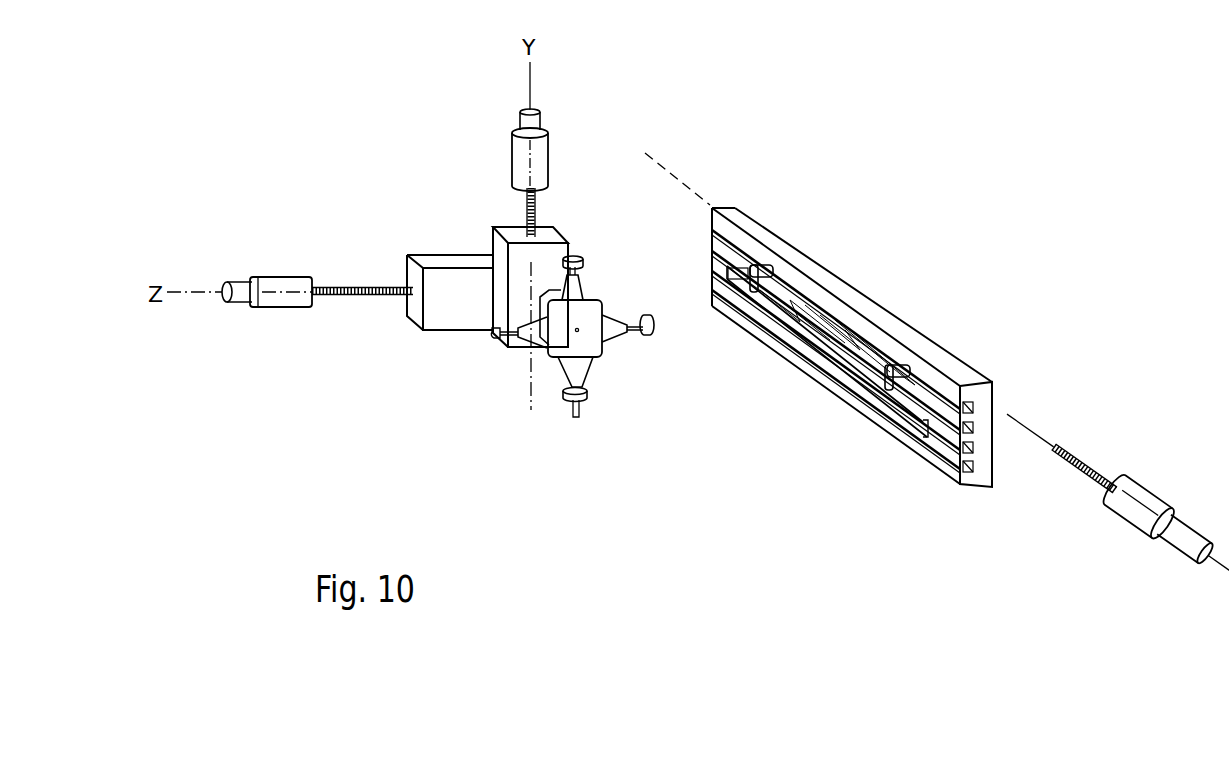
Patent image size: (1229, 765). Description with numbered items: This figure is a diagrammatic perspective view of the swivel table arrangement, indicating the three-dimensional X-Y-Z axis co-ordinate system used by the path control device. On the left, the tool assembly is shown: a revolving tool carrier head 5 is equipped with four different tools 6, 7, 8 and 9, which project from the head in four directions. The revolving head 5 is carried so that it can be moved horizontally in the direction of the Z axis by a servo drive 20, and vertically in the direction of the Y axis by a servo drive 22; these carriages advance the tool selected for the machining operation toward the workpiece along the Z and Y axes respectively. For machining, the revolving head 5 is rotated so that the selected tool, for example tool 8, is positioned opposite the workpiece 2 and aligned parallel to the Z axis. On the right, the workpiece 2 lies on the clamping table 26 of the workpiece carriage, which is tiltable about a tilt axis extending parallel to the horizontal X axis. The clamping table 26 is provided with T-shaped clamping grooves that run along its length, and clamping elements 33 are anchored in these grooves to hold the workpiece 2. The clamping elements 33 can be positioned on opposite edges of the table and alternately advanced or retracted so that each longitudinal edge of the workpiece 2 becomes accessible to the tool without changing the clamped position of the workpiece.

The workpiece 2 is at (860, 347).
The revolving tool carrier head 5 is at (570, 338).
The tool 6 is at (497, 338).
The tool 7 is at (581, 409).
The tool 8 is at (647, 315).
The tool 9 is at (587, 262).
The servo drive 20 is at (288, 298).
The servo drive 22 is at (542, 158).
The clamping table 26 is at (983, 473).
The clamping elements 33 is at (890, 365).